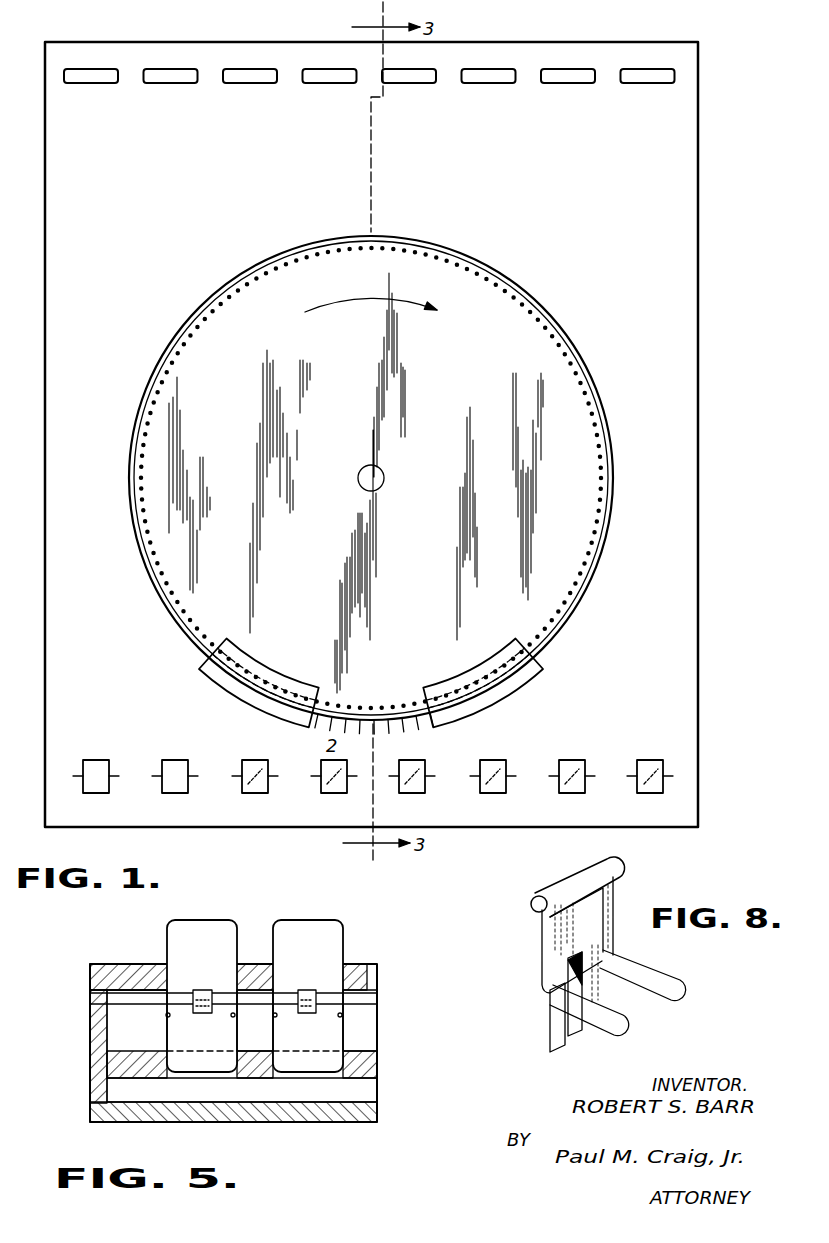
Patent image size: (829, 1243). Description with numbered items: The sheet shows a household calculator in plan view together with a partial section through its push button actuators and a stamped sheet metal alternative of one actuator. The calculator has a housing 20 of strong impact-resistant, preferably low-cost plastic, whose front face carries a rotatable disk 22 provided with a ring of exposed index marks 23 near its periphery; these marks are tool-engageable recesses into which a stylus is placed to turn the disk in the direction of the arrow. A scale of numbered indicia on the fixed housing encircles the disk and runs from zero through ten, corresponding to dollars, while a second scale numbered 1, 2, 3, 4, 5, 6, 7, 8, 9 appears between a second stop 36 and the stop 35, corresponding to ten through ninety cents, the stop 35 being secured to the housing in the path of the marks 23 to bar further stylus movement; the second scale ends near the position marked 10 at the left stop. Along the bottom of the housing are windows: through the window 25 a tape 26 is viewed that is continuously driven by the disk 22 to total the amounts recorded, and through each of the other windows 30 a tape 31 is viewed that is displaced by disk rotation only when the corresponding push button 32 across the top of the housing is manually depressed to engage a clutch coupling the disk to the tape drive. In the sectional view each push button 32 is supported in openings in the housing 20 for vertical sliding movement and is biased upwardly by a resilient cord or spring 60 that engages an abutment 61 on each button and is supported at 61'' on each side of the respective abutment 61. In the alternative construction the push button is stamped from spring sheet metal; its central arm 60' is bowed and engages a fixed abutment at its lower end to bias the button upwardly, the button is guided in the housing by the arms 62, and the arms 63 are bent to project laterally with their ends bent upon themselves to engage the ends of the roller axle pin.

In FIG. 1, the index mark 1 is at (611, 573).
In FIG. 1, the disc rim 2 is at (612, 447).
In FIG. 1, the index mark 3 is at (581, 340).
In FIG. 1, the index mark 4 is at (492, 253).
In FIG. 1, the index mark 5 is at (372, 222).
In FIG. 1, the index mark 6 is at (252, 250).
In FIG. 1, the index mark 7 is at (163, 331).
In FIG. 1, the index mark 8 is at (113, 446).
In FIG. 1, the index mark 9 is at (131, 570).
In FIG. 1, the index mark 10 is at (189, 677).
In FIG. 1, the housing 20 is at (699, 678).
In FIG. 5, the housing 20 is at (90, 1075).
In FIG. 1, the rotatable disk 22 is at (513, 335).
In FIG. 1, the index marks 23 is at (588, 393).
In FIG. 1, the window 25 is at (652, 760).
In FIG. 1, the tape 26 is at (650, 782).
In FIG. 1, the windows 30 is at (110, 768).
In FIG. 1, the tape 31 is at (90, 760).
In FIG. 1, the push button 32 is at (569, 84).
In FIG. 5, the push button 32 is at (283, 940).
In FIG. 1, the stop 35 is at (510, 661).
In FIG. 1, the second stop 36 is at (311, 661).
In FIG. 5, the resilient cord or spring 60 is at (233, 1020).
In FIG. 8, the central arm 60' is at (578, 955).
In FIG. 5, the abutment 61 is at (250, 1014).
In FIG. 5, the support 61'' is at (214, 1020).
In FIG. 8, the arms 62 is at (595, 983).
In FIG. 8, the arms 63 is at (633, 1025).